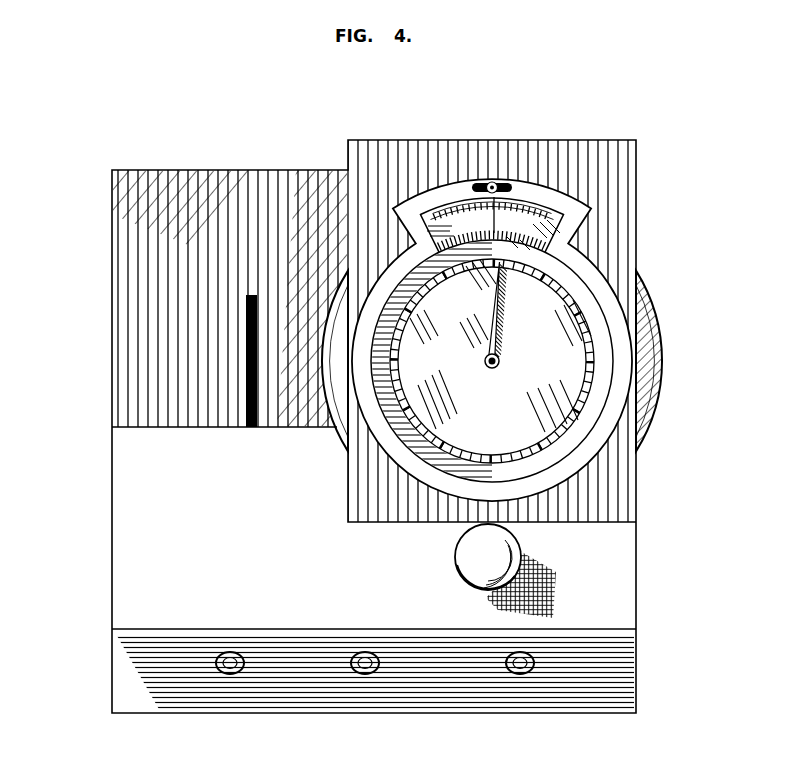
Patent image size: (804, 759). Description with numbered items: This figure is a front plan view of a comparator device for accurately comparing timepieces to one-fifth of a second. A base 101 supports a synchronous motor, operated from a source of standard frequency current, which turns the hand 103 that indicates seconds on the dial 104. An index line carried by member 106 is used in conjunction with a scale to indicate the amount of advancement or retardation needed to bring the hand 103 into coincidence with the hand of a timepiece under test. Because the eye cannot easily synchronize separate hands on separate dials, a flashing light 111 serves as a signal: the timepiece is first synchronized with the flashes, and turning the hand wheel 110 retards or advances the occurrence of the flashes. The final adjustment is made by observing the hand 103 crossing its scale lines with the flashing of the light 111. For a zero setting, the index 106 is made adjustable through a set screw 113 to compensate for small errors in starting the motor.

The base 101 is at (186, 176).
The hand 103 is at (505, 316).
The dial 104 is at (575, 388).
The member carrying index line 106 is at (553, 210).
The hand wheel 110 is at (248, 372).
The light 111 is at (513, 543).
The set screw 113 is at (500, 179).